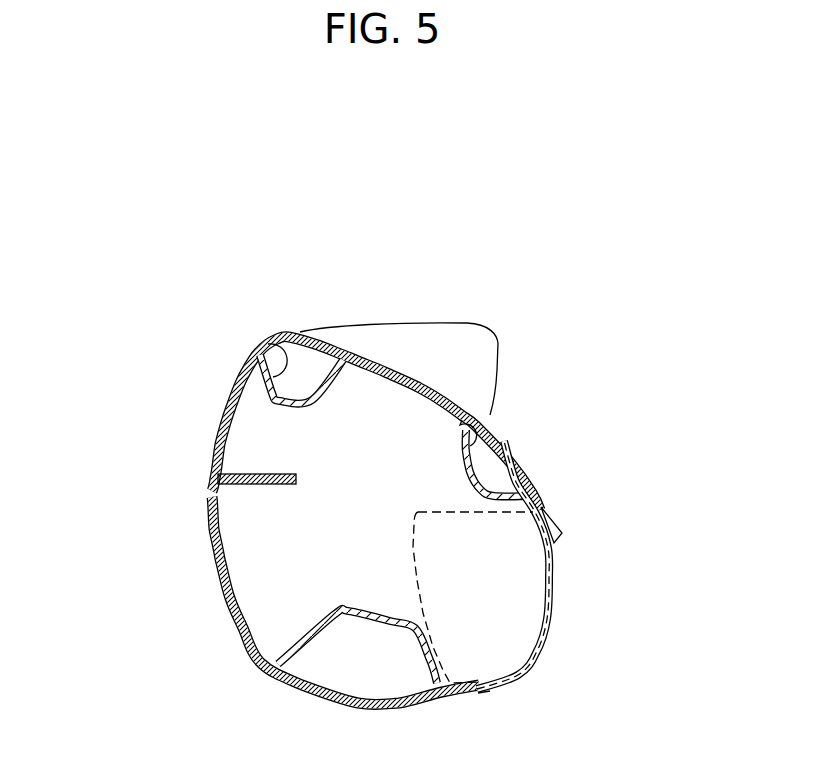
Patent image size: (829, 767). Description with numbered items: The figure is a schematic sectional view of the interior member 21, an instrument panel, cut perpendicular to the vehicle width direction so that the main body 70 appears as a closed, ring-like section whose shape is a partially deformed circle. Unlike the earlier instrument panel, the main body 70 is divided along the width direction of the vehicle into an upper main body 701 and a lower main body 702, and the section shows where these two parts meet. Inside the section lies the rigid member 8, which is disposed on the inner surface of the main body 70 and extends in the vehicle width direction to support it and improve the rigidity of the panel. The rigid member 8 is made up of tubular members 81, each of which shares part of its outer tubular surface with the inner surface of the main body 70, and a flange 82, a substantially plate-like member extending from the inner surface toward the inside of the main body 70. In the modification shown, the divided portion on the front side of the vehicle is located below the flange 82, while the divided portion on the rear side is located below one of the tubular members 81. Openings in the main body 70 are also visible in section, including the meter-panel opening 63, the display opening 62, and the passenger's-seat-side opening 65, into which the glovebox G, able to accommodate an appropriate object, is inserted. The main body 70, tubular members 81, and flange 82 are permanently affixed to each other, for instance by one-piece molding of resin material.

The interior member 21 is at (358, 272).
The main body 70 is at (289, 521).
The upper main body 701 is at (210, 442).
The lower main body 702 is at (208, 553).
The rigid member 8 is at (246, 252).
The tubular member 81 is at (270, 350).
The flange 82 is at (248, 473).
The meter-panel opening 63 is at (500, 370).
The display opening 62 is at (543, 503).
The passenger's-seat-side opening 65 is at (500, 688).
The glovebox G is at (558, 620).